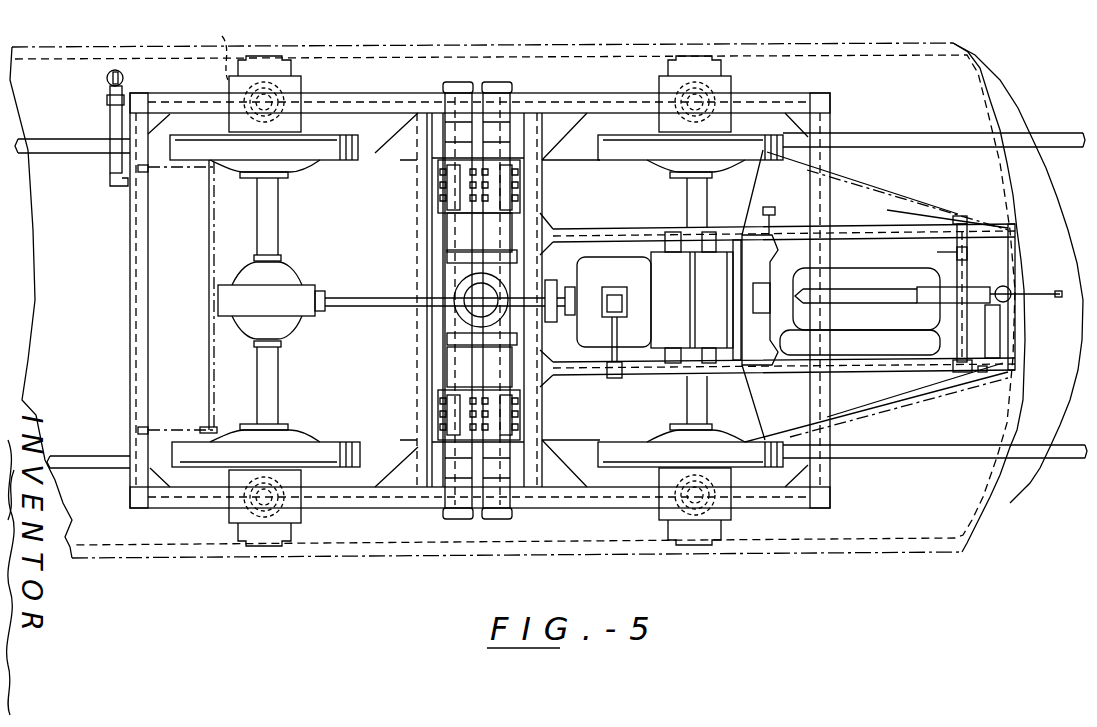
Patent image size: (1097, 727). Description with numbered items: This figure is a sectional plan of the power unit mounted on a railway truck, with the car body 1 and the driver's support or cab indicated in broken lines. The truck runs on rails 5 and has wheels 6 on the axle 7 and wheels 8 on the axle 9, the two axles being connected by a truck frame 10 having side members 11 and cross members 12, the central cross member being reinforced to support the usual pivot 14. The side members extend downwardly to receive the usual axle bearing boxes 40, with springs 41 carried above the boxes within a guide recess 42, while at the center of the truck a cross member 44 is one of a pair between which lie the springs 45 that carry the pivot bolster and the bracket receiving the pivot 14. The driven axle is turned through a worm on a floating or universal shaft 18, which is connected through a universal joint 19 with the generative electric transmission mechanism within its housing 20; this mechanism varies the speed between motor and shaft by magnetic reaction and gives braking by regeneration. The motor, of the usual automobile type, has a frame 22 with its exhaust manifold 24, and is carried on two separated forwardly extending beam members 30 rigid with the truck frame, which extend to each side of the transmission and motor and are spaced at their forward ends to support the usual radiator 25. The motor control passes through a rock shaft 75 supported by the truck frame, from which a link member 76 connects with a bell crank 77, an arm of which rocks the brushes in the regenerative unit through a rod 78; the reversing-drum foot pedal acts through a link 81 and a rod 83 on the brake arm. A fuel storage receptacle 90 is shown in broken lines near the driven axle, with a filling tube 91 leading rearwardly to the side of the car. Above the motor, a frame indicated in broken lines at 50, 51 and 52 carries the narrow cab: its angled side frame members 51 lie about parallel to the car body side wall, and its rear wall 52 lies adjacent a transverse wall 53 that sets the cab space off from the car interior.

The car body 1 is at (480, 45).
The rails 5 is at (79, 150).
The wheels 6 is at (334, 161).
The axle 7 is at (280, 215).
The wheels 8 is at (618, 160).
The axle 9 is at (690, 400).
The truck frame 10 is at (128, 345).
The side members 11 is at (606, 95).
The cross members 12 is at (128, 272).
The pivot 14 is at (470, 318).
The floating or universal shaft 18 is at (348, 298).
The universal joint 19 is at (552, 322).
The transmission housing 20 is at (584, 264).
The motor frame 22 is at (890, 268).
The exhaust manifold 24 is at (888, 339).
The radiator 25 is at (1005, 277).
The beam members 30 is at (965, 224).
The axle bearing boxes 40 is at (266, 62).
The springs 41 is at (302, 87).
The guide recess 42 is at (207, 48).
The cross member 44 is at (428, 215).
The springs 45 is at (462, 455).
The cab frame part 50 is at (727, 273).
The side frame members of the cab 51 is at (855, 178).
The rear wall of the cab 52 is at (768, 411).
The transverse wall 53 is at (756, 150).
The rock shaft 75 is at (975, 270).
The link member 76 is at (896, 215).
The bell crank 77 is at (770, 213).
The rod 78 is at (760, 300).
The link 81 is at (992, 376).
The rod 83 is at (640, 378).
The fuel storage receptacle 90 is at (210, 220).
The filling tube 91 is at (108, 82).